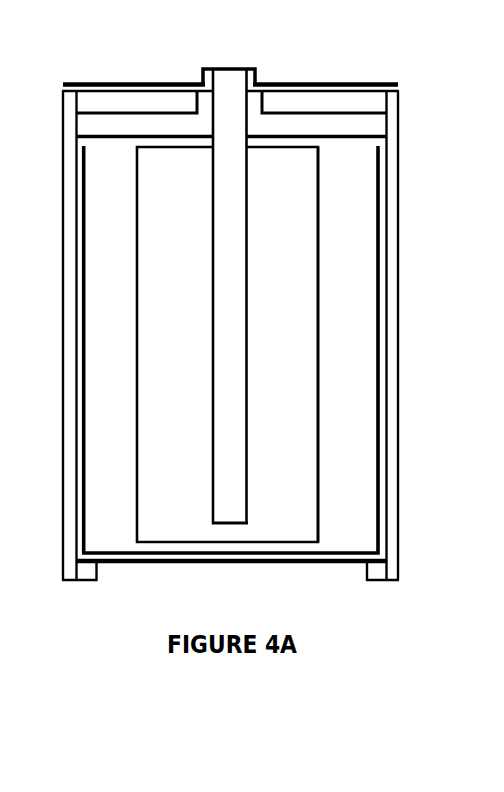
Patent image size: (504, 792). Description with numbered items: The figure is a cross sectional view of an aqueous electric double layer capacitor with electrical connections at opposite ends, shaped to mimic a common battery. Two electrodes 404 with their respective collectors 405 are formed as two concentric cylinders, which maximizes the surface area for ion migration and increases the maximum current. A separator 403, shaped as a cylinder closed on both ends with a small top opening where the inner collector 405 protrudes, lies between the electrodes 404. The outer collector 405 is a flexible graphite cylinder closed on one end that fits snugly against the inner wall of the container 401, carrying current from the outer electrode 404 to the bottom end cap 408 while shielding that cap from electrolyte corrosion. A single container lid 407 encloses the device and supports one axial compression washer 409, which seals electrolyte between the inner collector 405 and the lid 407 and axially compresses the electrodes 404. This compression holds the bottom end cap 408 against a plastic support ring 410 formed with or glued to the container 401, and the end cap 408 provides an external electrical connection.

The container 401 is at (399, 296).
The separator 403 is at (318, 338).
The electrodes 404 is at (288, 255).
The collectors 405 is at (230, 218).
The container lid 407 is at (367, 103).
The bottom end cap 408 is at (333, 82).
The compression washer 409 is at (308, 127).
The support ring 410 is at (378, 567).